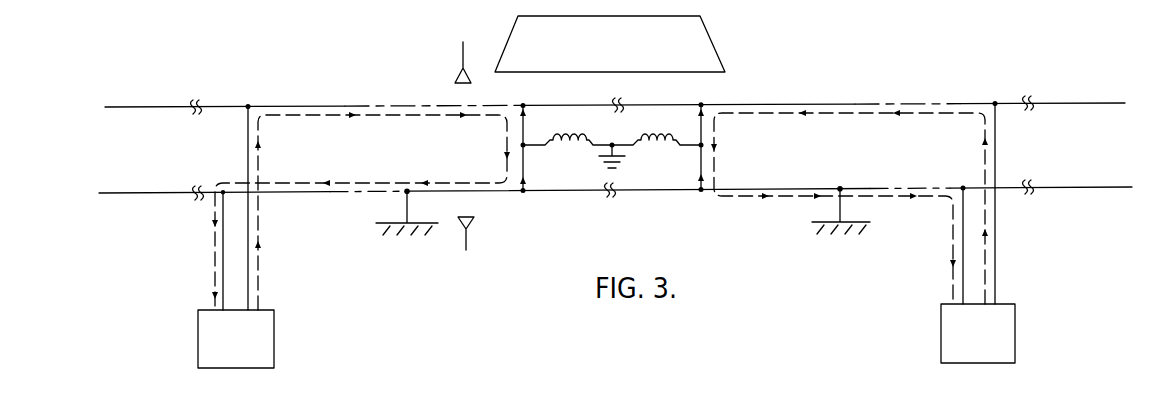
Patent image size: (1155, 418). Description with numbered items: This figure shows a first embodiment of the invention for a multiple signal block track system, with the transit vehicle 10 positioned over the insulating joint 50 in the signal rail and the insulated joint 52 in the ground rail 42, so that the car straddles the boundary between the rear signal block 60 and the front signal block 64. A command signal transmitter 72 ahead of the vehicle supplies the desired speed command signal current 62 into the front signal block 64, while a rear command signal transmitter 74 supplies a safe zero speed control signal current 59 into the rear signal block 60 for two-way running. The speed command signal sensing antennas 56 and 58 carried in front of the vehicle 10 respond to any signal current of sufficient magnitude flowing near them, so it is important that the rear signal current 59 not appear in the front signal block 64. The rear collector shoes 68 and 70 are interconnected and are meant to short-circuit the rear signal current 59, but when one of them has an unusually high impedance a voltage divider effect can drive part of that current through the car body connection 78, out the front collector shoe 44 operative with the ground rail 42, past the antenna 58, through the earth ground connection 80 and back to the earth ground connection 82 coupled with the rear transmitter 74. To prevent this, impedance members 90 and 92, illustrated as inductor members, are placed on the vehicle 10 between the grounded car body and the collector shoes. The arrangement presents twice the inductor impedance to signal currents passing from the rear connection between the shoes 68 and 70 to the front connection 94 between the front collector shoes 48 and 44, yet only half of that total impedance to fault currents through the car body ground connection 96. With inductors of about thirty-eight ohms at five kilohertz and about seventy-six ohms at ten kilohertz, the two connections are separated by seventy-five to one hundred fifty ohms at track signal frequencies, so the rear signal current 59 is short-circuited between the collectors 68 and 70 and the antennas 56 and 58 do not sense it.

The vehicle car 10 is at (664, 51).
The ground rail 42 is at (327, 194).
The collector shoe 44 is at (525, 190).
The collector shoe 48 is at (526, 113).
The insulating joint 50 is at (621, 102).
The insulated joint 52 is at (609, 195).
The speed command signal sensing antenna 56 is at (457, 77).
The speed command signal sensing antenna 58 is at (476, 220).
The rear signal current 59 is at (932, 115).
The rear signal block 60 is at (844, 156).
The front signal current 62 is at (355, 116).
The front signal block 64 is at (389, 157).
The rear collector shoe 68 is at (703, 104).
The rear collector shoe 70 is at (702, 191).
The command signal transmitter 72 is at (275, 339).
The rear command signal transmitter 74 is at (1016, 340).
The car body connection 78 is at (616, 141).
The earth ground connection 80 is at (405, 197).
The earth ground connection 82 is at (838, 203).
The impedance member 90 is at (576, 138).
The impedance member 92 is at (659, 138).
The front connection 94 is at (527, 164).
The car body ground connection 96 is at (616, 148).